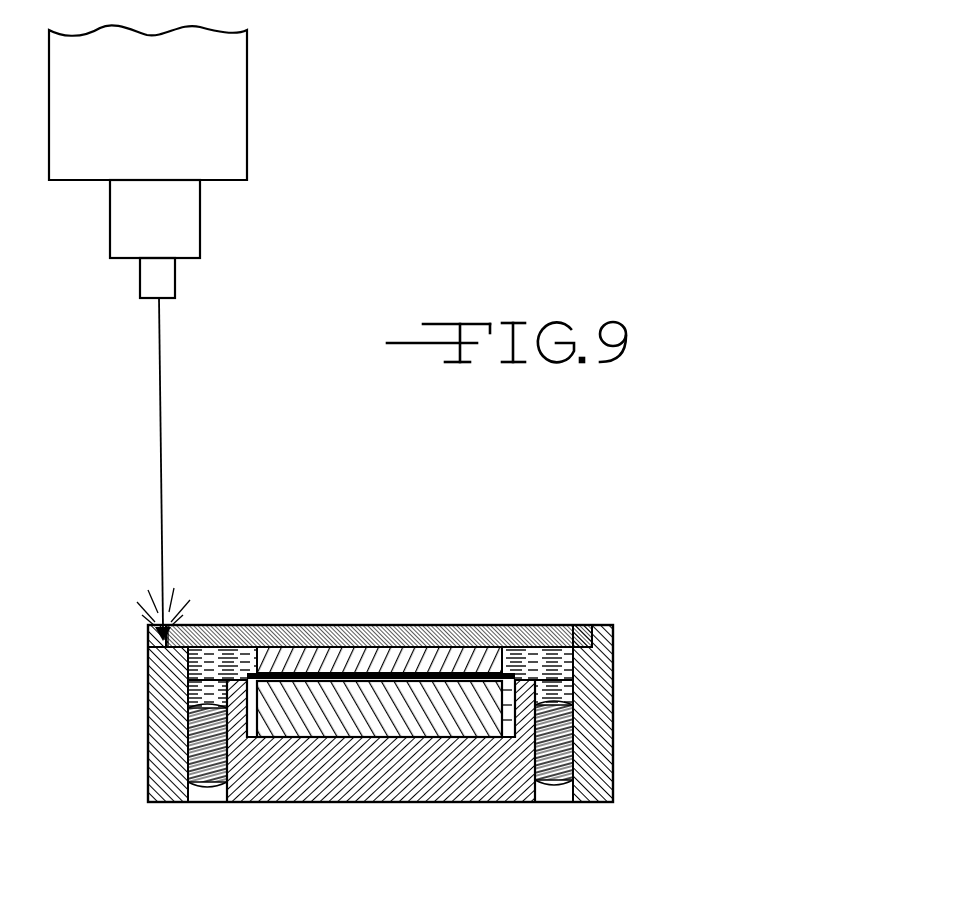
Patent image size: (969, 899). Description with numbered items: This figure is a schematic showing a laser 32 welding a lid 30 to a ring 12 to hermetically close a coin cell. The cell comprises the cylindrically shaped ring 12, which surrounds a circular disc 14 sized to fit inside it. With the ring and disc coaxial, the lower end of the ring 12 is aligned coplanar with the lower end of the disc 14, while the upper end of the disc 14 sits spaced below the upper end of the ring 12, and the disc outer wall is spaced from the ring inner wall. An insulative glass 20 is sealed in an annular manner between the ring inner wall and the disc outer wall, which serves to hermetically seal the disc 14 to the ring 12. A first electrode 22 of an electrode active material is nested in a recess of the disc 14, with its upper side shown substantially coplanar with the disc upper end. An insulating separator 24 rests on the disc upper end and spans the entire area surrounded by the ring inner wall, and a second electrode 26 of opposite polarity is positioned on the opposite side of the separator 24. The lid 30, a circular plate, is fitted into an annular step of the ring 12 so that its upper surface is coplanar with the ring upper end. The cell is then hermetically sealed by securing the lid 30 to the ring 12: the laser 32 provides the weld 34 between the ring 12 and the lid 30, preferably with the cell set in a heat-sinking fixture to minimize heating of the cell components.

The ring 12 is at (613, 725).
The disc 14 is at (348, 802).
The insulative glass 20 is at (557, 773).
The first electrode 22 is at (341, 690).
The insulating separator 24 is at (433, 676).
The second electrode 26 is at (393, 655).
The lid 30 is at (285, 622).
The laser 32 is at (248, 135).
The weld 34 is at (592, 625).